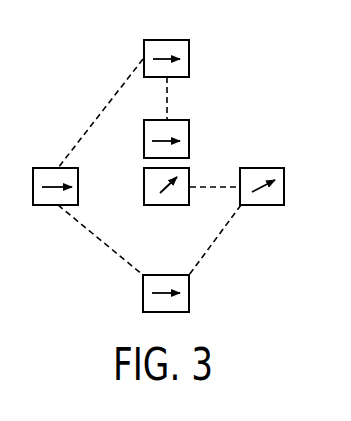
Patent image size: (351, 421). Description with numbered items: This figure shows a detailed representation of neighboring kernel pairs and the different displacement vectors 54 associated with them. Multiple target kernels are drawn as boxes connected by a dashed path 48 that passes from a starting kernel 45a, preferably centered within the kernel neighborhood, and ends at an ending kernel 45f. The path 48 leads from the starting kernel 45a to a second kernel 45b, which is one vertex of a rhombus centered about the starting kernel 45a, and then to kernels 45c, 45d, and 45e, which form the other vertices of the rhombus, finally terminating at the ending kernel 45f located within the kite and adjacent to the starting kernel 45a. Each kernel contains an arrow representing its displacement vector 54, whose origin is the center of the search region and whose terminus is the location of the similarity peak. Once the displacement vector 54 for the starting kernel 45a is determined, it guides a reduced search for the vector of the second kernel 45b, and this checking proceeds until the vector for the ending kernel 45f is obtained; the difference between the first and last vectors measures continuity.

The starting kernel 45a is at (165, 205).
The second kernel 45b is at (284, 187).
The kernel 45c is at (189, 294).
The kernel 45d is at (43, 205).
The kernel 45e is at (144, 48).
The ending kernel 45f is at (144, 147).
The path 48 is at (113, 97).
The displacement vector 54 is at (160, 58).